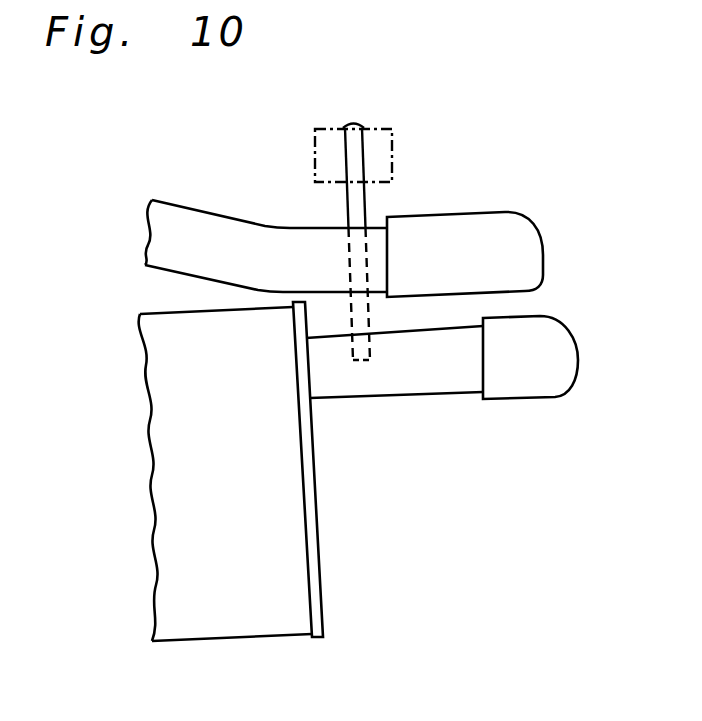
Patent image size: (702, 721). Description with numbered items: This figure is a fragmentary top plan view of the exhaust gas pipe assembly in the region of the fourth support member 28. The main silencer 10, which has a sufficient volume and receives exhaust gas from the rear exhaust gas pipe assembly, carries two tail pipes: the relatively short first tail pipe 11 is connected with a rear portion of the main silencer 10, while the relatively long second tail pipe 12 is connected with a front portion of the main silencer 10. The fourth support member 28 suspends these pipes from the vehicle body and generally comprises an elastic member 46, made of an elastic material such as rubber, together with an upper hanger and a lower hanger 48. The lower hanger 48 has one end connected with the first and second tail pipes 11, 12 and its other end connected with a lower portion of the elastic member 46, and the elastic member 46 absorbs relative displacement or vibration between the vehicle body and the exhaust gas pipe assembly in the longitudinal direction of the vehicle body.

The main silencer 10 is at (290, 607).
The first tail pipe 11 is at (452, 378).
The second tail pipe 12 is at (222, 225).
The fourth support member 28 is at (410, 181).
The elastic member 46 is at (393, 140).
The lower hanger 48 is at (353, 208).